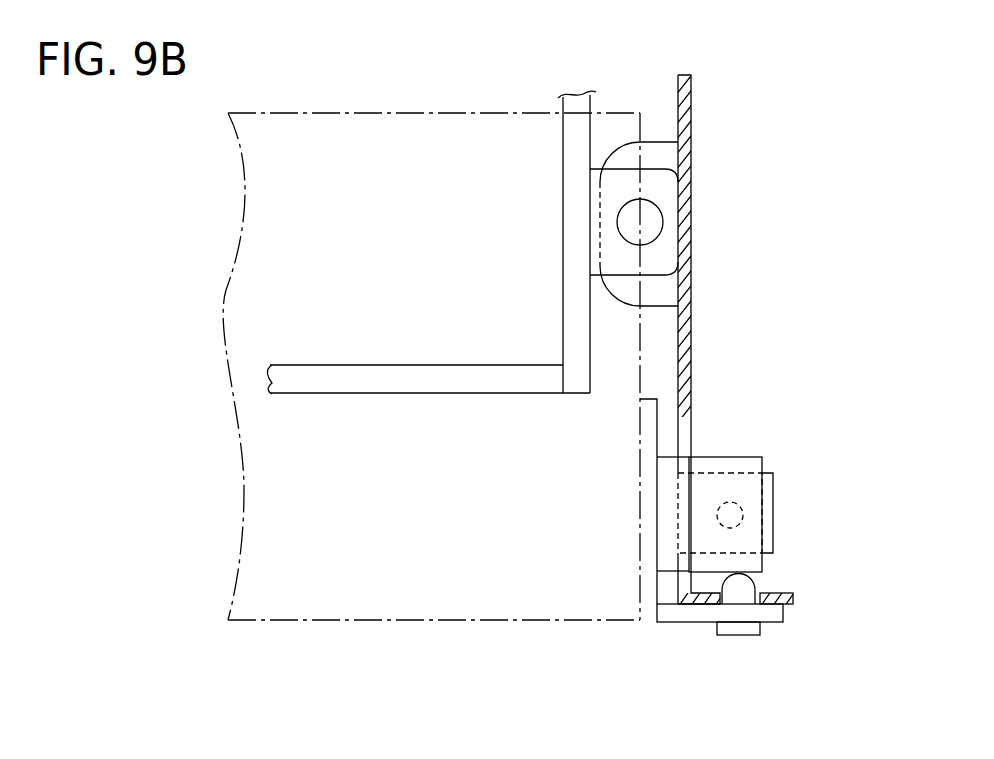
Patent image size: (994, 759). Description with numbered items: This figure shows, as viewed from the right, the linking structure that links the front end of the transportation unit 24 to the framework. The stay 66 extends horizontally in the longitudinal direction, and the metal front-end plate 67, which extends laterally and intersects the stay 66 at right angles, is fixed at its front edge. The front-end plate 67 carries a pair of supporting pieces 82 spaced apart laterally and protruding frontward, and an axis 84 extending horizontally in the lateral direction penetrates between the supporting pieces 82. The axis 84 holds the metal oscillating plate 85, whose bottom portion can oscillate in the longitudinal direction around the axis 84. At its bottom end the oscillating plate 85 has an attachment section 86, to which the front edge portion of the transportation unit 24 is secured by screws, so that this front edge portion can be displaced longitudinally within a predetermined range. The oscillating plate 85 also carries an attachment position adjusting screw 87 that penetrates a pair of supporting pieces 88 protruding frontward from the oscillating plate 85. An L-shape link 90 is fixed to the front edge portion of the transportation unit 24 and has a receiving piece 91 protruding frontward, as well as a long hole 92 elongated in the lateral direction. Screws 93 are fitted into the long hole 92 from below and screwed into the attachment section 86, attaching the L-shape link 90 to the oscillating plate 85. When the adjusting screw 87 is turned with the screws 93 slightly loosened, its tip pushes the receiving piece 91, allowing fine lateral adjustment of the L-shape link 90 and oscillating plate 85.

The transportation unit 24 is at (373, 620).
The stay 66 is at (403, 378).
The front-end plate 67 is at (590, 130).
The supporting pieces 82 is at (663, 181).
The axis 84 is at (647, 223).
The oscillating plate 85 is at (691, 315).
The attachment section 86 is at (793, 598).
The attachment position adjusting screw 87 is at (738, 505).
The supporting pieces 88 is at (773, 516).
The L-shape link 90 is at (655, 623).
The receiving piece 91 is at (708, 457).
The long hole 92 is at (753, 593).
The screws 93 is at (738, 635).